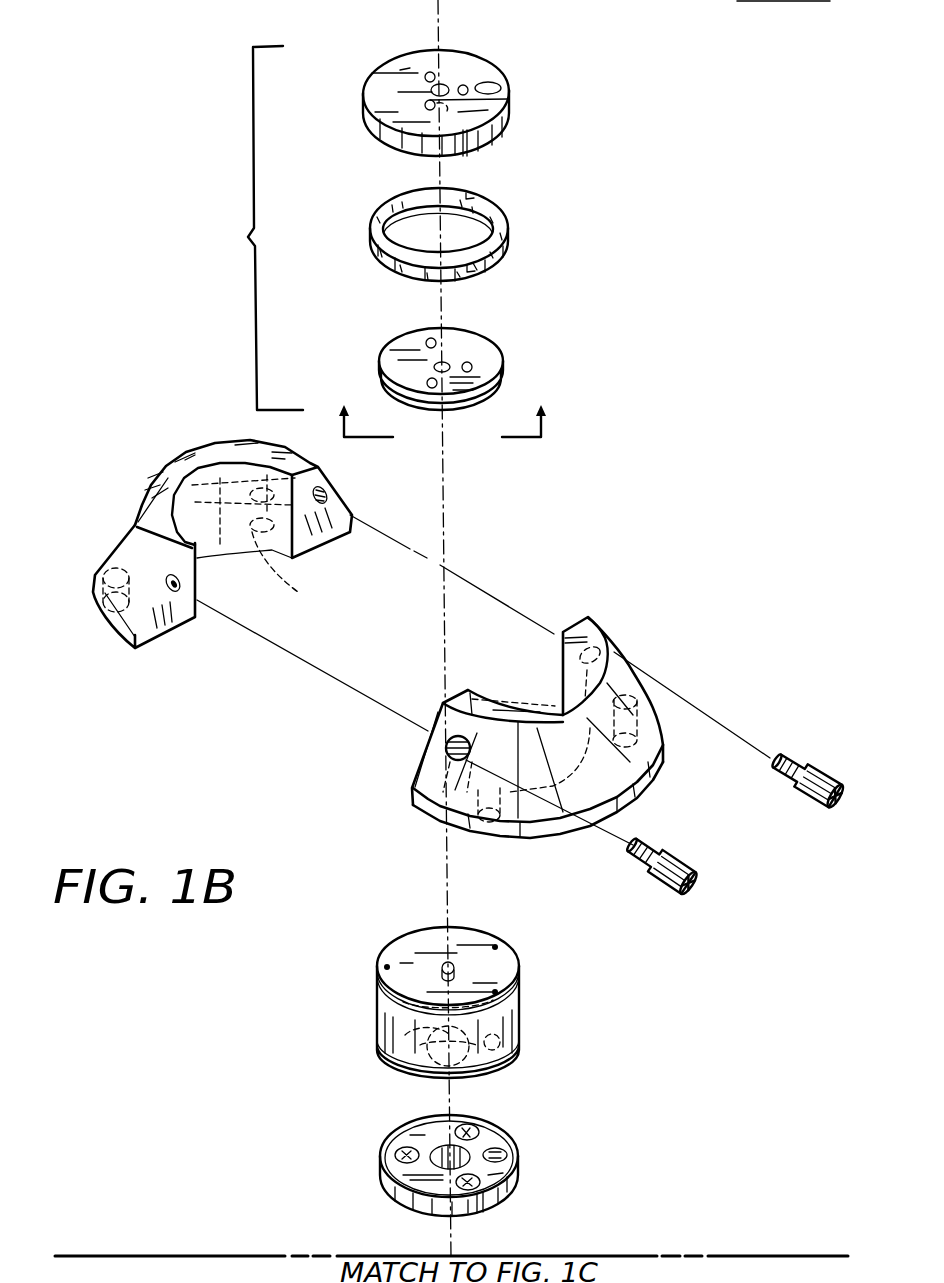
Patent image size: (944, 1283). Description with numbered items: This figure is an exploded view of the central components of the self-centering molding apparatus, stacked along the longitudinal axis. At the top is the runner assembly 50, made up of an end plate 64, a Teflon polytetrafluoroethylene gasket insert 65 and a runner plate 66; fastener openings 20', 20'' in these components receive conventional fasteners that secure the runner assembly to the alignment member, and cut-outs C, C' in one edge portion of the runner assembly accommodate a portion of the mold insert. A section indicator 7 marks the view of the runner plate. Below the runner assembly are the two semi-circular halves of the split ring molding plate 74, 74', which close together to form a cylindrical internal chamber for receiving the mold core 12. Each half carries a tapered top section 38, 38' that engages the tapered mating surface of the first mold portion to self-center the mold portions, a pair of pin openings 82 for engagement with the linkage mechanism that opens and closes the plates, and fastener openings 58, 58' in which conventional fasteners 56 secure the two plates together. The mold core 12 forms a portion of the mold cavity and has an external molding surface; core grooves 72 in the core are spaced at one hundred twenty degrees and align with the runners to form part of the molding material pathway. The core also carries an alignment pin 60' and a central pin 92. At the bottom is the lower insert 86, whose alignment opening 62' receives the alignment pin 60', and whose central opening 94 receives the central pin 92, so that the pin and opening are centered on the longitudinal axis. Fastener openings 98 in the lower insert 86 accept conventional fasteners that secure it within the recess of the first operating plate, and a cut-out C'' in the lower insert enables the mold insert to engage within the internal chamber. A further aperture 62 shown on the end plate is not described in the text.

The mold core 12 is at (533, 1005).
The fastener opening 20' is at (483, 57).
The fastener opening 20'' is at (484, 332).
The tapered top section 38 is at (568, 727).
The tapered top section 38' is at (209, 544).
The runner assembly 50 is at (253, 228).
The fastener 56 is at (692, 855).
The fastener opening 58 is at (409, 791).
The fastener opening 58' is at (203, 637).
The alignment pin 60' is at (561, 1064).
The aperture 62 is at (537, 74).
The alignment opening 62' is at (550, 1154).
The end plate 64 is at (509, 100).
The Teflon polytetrafluoroethylene gasket insert 65 is at (504, 240).
The runner plate 66 is at (484, 357).
The section line 7- 7 is at (442, 403).
The core grooves 72 is at (497, 946).
The split ring molding plate 74 is at (633, 639).
The split ring molding plate 74' is at (364, 488).
The pin openings 82 is at (293, 590).
The lower insert 86 is at (517, 1178).
The central pin 92 is at (403, 1066).
The central opening 94 is at (440, 1147).
The fastener opening 98 is at (405, 1163).
The cut-out C is at (471, 109).
The cut-out C' is at (459, 233).
The cut-out C'' is at (477, 1153).